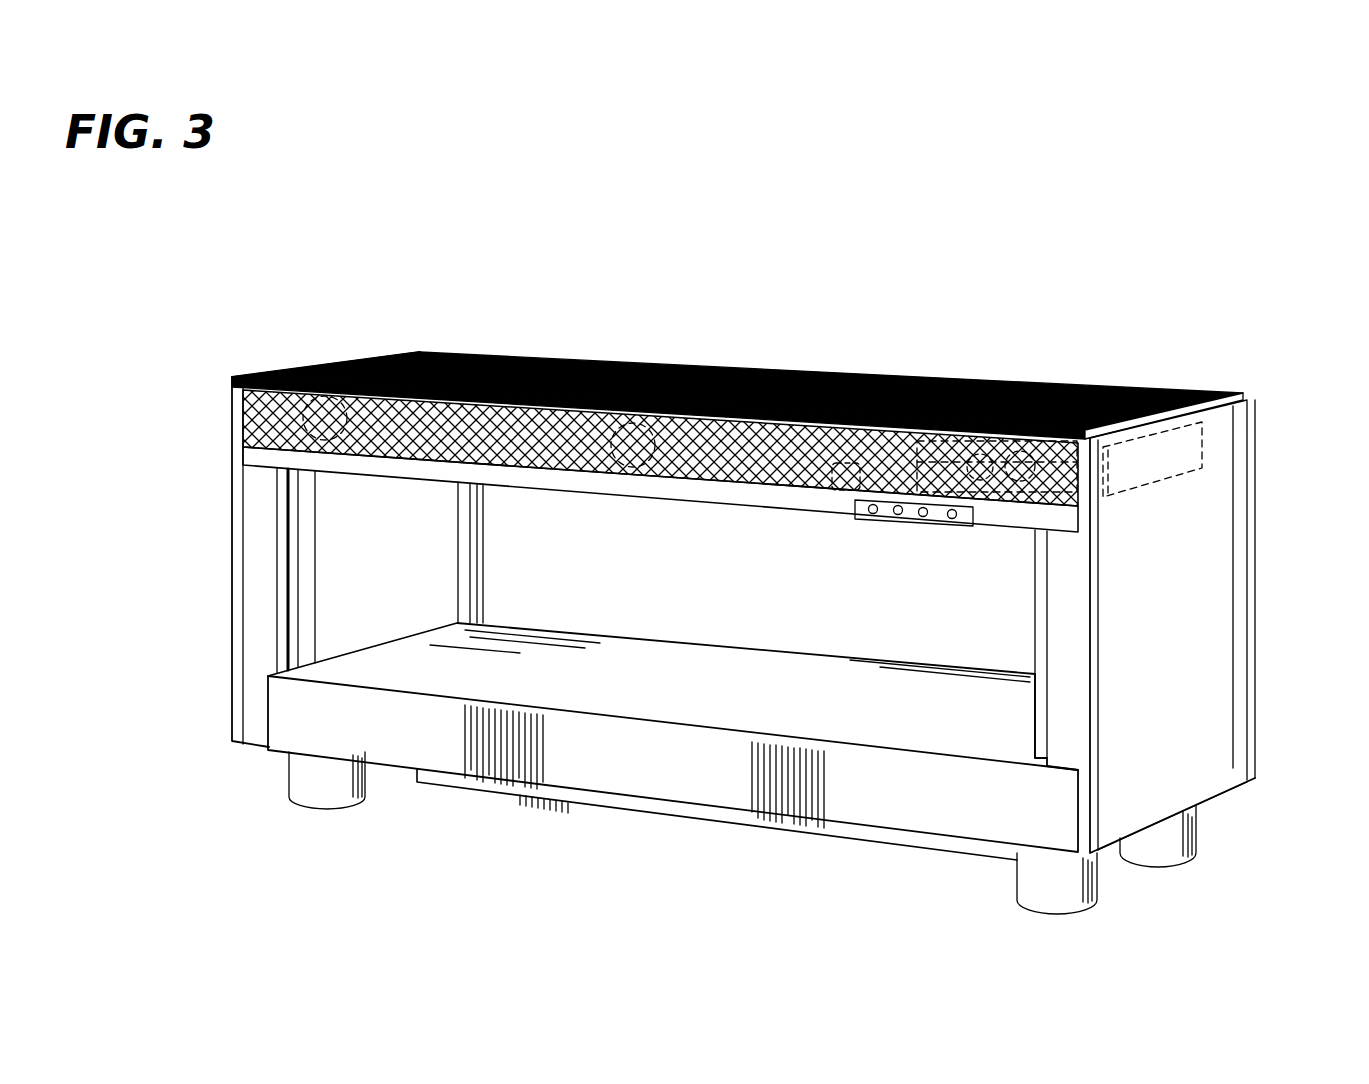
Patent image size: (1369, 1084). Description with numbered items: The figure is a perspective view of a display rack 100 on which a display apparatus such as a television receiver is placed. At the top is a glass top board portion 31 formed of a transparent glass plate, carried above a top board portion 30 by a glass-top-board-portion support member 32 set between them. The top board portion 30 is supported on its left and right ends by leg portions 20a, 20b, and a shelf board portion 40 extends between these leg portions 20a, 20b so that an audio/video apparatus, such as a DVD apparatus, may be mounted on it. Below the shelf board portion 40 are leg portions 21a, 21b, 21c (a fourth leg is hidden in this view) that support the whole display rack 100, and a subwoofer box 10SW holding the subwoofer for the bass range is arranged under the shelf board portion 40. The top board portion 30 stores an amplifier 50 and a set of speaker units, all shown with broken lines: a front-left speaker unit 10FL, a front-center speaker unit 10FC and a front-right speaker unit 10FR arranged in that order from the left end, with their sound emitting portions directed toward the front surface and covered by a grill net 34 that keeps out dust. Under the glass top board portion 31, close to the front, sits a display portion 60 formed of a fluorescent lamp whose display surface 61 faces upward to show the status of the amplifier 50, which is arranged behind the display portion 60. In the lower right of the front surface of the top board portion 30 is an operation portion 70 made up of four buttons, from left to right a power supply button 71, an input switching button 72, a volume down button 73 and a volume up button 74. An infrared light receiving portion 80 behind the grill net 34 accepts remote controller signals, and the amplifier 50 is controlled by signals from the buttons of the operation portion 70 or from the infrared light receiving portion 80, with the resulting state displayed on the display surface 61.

The display rack 100 is at (224, 216).
The glass top board portion 31 is at (428, 350).
The glass-top-board-portion support member 32 is at (232, 384).
The top board portion 30 is at (240, 410).
The grill net 34 is at (242, 455).
The front-left speaker unit 10FL is at (352, 440).
The front-center speaker unit 10FC is at (640, 468).
The front-right speaker unit 10FR is at (1058, 510).
The subwoofer box 10SW is at (745, 820).
The display portion 60 is at (1094, 390).
The display surface 61 is at (1012, 380).
The infrared light receiving portion 80 is at (842, 494).
The operation portion 70 is at (924, 560).
The power supply button 71 is at (873, 514).
The input switching button 72 is at (898, 515).
The volume down button 73 is at (923, 517).
The volume up button 74 is at (978, 548).
The leg portion 20a is at (232, 622).
The leg portion 20b is at (1215, 655).
The amplifier 50 is at (1202, 441).
The shelf board portion 40 is at (735, 665).
The leg portion 21a is at (302, 782).
The leg portion 21b is at (1075, 898).
The leg portion 21c is at (1180, 833).